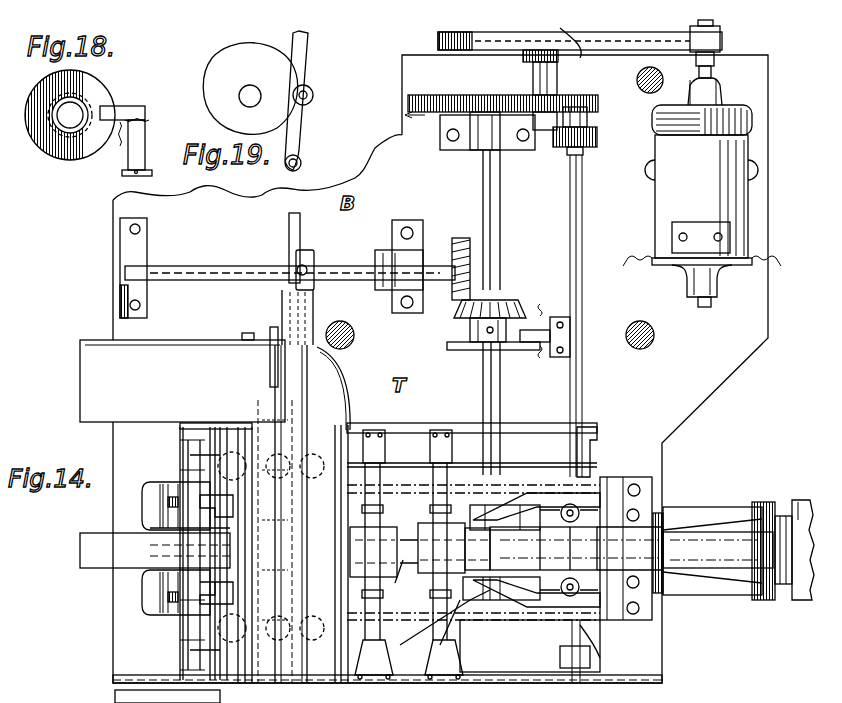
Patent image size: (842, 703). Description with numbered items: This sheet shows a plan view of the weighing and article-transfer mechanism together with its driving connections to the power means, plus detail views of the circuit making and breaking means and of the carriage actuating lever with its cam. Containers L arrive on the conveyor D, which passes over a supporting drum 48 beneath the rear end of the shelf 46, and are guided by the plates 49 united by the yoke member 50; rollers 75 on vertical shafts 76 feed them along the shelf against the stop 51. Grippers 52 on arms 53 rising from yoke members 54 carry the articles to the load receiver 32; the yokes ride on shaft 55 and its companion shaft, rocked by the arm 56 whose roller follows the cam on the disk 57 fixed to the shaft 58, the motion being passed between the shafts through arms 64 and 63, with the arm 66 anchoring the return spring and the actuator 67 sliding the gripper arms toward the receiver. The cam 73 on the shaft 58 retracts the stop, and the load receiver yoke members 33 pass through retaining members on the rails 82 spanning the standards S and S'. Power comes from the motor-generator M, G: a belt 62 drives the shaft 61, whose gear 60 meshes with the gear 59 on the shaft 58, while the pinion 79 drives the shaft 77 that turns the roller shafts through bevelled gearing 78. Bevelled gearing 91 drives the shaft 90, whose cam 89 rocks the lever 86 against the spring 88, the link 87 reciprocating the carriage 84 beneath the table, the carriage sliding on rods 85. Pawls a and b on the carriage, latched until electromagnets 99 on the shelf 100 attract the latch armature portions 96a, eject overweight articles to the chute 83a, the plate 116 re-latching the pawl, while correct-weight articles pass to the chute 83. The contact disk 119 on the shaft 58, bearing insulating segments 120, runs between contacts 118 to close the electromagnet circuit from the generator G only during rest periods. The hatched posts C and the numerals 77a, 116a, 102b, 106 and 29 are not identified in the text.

In FIG. 18, the segmental sections of insulating material 120 is at (50, 150).
In FIG. 14, the segmental sections of insulating material 120 is at (514, 330).
In FIG. 18, the opposed contacts 118 is at (128, 108).
In FIG. 14, the opposed contacts 118 is at (570, 322).
In FIG. 18, the contact maker disk 119 is at (100, 88).
In FIG. 14, the contact maker disk 119 is at (466, 350).
In FIG. 19, the cam 89 is at (250, 89).
In FIG. 14, the cam 89 is at (300, 240).
In FIG. 19, the shaft 90 is at (240, 100).
In FIG. 14, the shaft 90 is at (232, 278).
In FIG. 19, the lever 86 is at (311, 80).
In FIG. 14, the lever 86 is at (315, 298).
In FIG. 14, the belt drive 62 is at (668, 40).
In FIG. 14, the motor M is at (702, 179).
In FIG. 14, the generator G is at (662, 232).
In FIG. 14, the post C is at (494, 217).
In FIG. 14, the gear 59 is at (442, 88).
In FIG. 14, the gear 60 is at (535, 82).
In FIG. 14, the shaft 61 is at (580, 53).
In FIG. 14, the pinion 79 is at (600, 110).
In FIG. 14, the shaft collar 77a is at (583, 152).
In FIG. 14, the shaft 58 is at (501, 392).
In FIG. 14, the shaft 77 is at (584, 276).
In FIG. 14, the arm 56 is at (584, 395).
In FIG. 14, the spring 88 is at (293, 268).
In FIG. 14, the link 87 is at (362, 372).
In FIG. 14, the bevelled gearing 91 is at (476, 275).
In FIG. 14, the chute 83a is at (182, 377).
In FIG. 14, the laterally elongated portion of the latch 96a is at (232, 430).
In FIG. 14, the vertical plate 116 is at (260, 445).
In FIG. 14, the standard S is at (180, 442).
In FIG. 14, the electromagnets 99 is at (188, 462).
In FIG. 14, the pawl a is at (205, 513).
In FIG. 14, the pawl b is at (190, 596).
In FIG. 14, the carriage 84 is at (200, 592).
In FIG. 14, the arm 64 is at (150, 528).
In FIG. 14, the chute 83 is at (155, 548).
In FIG. 14, the arm 63 is at (200, 582).
In FIG. 14, the rods 85 is at (210, 632).
In FIG. 14, the rails 82 is at (432, 420).
In FIG. 14, the yoke members 33 is at (380, 470).
In FIG. 14, the shelf 100 is at (478, 450).
In FIG. 14, the load receiver 32 is at (412, 527).
In FIG. 14, the disk 57 is at (462, 527).
In FIG. 14, the containers L is at (414, 570).
In FIG. 14, the actuator 67 is at (410, 570).
In FIG. 14, the stop 51 is at (436, 622).
In FIG. 14, the yoke members 54 is at (500, 470).
In FIG. 14, the article engaging and gripping members 52 is at (532, 503).
In FIG. 14, the arms 53 is at (560, 490).
In FIG. 14, the bevelled gearing 78 is at (580, 508).
In FIG. 14, the shaft 55 is at (590, 598).
In FIG. 14, the arm 66 is at (604, 651).
In FIG. 14, the vertical shafts 76 is at (655, 505).
In FIG. 14, the rollers 75 is at (658, 597).
In FIG. 14, the yoke member 50 is at (664, 525).
In FIG. 14, the plates 49 is at (712, 507).
In FIG. 14, the shelf 46 is at (740, 556).
In FIG. 14, the supporting drum 48 is at (776, 502).
In FIG. 14, the conveyor D is at (796, 515).
In FIG. 14, the rod 116a is at (262, 670).
In FIG. 14, the plate 102b is at (312, 683).
In FIG. 14, the base 106 is at (378, 696).
In FIG. 14, the cam 73 is at (452, 670).
In FIG. 14, the frame 29 is at (666, 697).